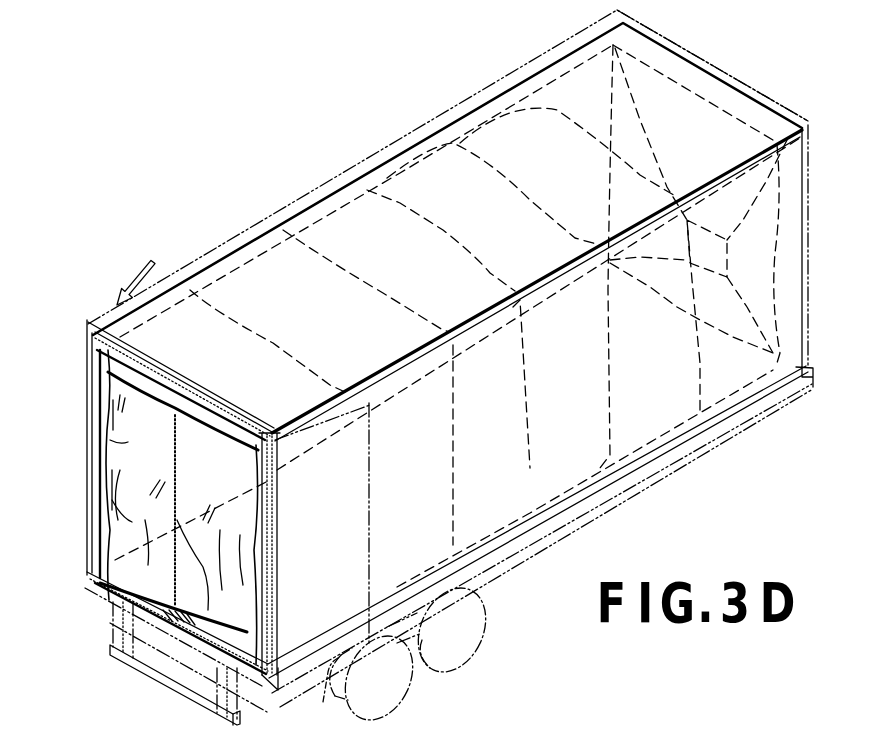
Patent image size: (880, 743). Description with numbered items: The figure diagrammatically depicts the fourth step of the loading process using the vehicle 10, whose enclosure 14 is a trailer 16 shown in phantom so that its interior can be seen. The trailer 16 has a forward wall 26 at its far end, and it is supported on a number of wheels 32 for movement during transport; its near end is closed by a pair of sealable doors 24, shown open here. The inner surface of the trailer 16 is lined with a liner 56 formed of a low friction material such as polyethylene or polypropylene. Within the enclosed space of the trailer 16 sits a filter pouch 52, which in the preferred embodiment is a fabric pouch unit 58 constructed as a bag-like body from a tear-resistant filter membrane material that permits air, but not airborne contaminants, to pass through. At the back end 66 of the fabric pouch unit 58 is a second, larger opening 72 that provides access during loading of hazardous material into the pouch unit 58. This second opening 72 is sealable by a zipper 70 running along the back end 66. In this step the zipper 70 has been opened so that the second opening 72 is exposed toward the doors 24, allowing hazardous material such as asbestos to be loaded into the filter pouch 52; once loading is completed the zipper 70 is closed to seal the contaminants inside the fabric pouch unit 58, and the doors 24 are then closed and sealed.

The vehicle 10 is at (268, 134).
The enclosure 14 is at (468, 140).
The trailer 16 is at (400, 137).
The sealable doors 24 is at (135, 282).
The forward wall 26 is at (752, 90).
The wheels 32 is at (390, 669).
The filter pouch 52 is at (90, 392).
The liner 56 is at (102, 408).
The fabric pouch unit 58 is at (123, 447).
The back end 66 is at (130, 572).
The zipper 70 is at (203, 558).
The second opening 72 is at (123, 518).